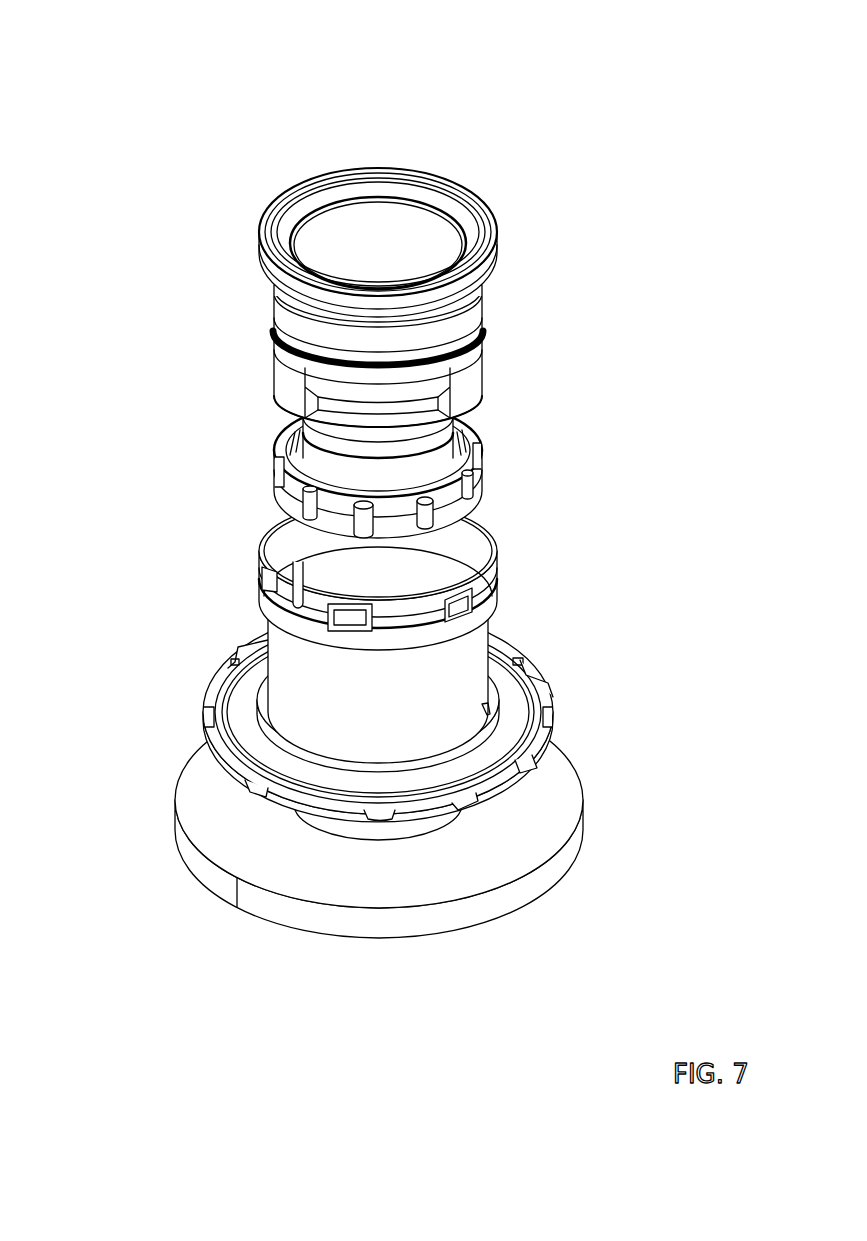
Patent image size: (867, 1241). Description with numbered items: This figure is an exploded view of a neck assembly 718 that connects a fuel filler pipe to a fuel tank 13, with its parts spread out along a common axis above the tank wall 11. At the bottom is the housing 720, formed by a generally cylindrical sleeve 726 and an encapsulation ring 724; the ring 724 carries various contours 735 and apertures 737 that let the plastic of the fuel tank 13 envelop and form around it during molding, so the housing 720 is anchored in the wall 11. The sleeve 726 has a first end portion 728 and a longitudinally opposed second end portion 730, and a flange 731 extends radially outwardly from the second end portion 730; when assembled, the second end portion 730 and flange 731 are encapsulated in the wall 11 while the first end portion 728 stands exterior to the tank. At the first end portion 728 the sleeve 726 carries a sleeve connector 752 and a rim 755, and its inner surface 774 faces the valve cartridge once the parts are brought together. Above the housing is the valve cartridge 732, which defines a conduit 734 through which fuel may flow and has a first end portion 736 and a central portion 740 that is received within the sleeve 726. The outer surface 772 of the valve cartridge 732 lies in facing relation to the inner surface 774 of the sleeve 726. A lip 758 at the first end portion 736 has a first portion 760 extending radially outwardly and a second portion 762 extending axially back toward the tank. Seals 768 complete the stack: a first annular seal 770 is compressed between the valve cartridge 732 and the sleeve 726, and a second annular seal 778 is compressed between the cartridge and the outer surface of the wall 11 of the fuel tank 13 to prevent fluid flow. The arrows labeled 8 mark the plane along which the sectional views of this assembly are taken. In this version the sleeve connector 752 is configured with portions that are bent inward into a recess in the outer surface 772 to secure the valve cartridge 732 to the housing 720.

The section line 8- 8 is at (392, 20).
The neck assembly 718 is at (688, 384).
The wall 11 is at (432, 815).
The fuel tank 13 is at (545, 815).
The sleeve 726 is at (522, 663).
The contours 735 is at (207, 732).
The apertures 737 is at (255, 792).
The encapsulation ring 724 is at (545, 735).
The flange 731 is at (238, 703).
The housing 720 is at (470, 650).
The second end portion 730 is at (488, 707).
The first end portion 728 is at (509, 533).
The sleeve connector 752 is at (302, 631).
The inner surface 774 is at (313, 565).
The rim 755 is at (348, 608).
The seals 768 is at (384, 396).
The second annular seal 778 is at (480, 460).
The first annular seal 770 is at (283, 318).
The outer surface 772 is at (470, 312).
The valve cartridge 732 is at (468, 355).
The central portion 740 is at (290, 372).
The first end portion 736 is at (506, 213).
The lip 758 is at (260, 248).
The first portion 760 is at (300, 186).
The second portion 762 is at (498, 259).
The conduit 734 is at (403, 256).